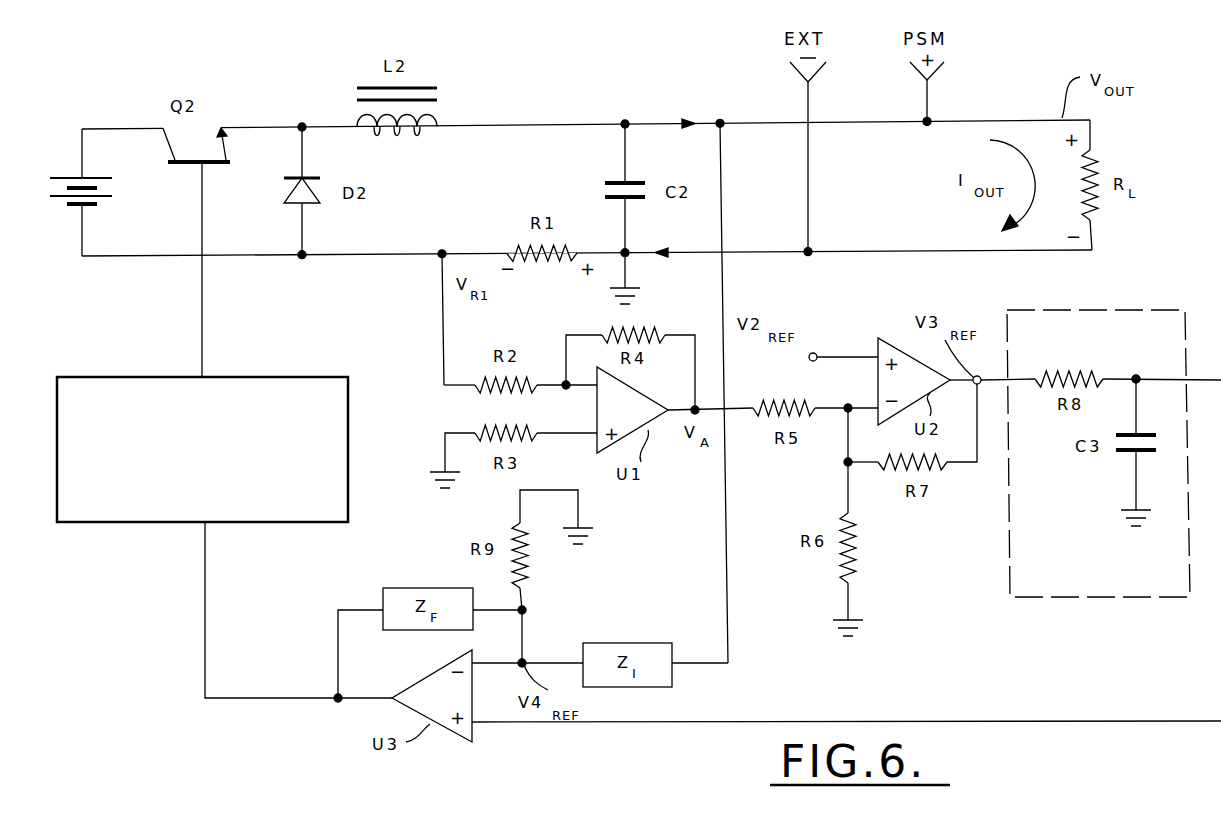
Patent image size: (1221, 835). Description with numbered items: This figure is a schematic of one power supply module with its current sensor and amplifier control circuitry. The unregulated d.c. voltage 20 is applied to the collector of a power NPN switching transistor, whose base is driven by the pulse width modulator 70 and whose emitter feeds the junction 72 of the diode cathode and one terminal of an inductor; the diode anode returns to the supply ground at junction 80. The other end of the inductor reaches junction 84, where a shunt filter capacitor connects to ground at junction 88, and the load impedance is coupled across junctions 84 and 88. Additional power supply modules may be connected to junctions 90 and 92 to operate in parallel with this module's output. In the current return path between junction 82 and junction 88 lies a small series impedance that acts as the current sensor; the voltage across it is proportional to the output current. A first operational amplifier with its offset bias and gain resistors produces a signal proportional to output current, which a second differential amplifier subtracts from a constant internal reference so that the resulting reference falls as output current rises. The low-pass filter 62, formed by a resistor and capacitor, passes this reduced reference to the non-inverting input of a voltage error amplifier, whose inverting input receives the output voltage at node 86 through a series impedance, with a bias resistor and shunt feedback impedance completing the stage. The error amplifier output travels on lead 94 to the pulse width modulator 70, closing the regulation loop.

The unregulated d.c. voltage 20 is at (68, 207).
The pulse width modulator 70 is at (104, 524).
The node between switching transistor and inductor 72 is at (302, 124).
The return node (diode anode junction) 80 is at (302, 258).
The junction 82 is at (442, 250).
The junction 84 is at (625, 121).
The node 86 is at (720, 120).
The junction 88 is at (629, 256).
The junction 90 is at (810, 255).
The junction 92 is at (930, 119).
The lead 94 is at (205, 645).
The low-pass filter 62 is at (1104, 598).